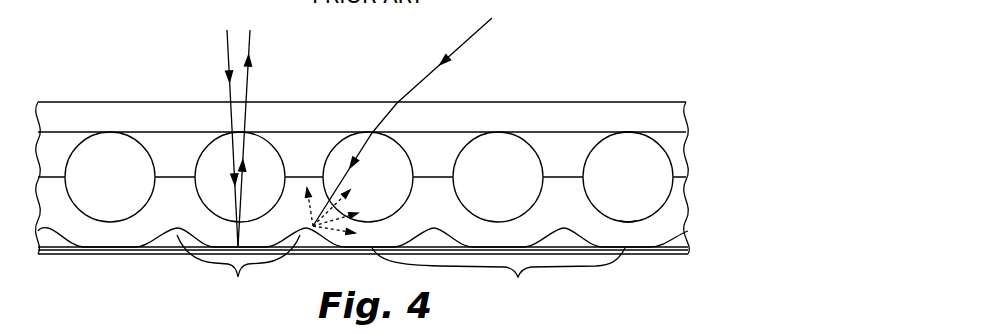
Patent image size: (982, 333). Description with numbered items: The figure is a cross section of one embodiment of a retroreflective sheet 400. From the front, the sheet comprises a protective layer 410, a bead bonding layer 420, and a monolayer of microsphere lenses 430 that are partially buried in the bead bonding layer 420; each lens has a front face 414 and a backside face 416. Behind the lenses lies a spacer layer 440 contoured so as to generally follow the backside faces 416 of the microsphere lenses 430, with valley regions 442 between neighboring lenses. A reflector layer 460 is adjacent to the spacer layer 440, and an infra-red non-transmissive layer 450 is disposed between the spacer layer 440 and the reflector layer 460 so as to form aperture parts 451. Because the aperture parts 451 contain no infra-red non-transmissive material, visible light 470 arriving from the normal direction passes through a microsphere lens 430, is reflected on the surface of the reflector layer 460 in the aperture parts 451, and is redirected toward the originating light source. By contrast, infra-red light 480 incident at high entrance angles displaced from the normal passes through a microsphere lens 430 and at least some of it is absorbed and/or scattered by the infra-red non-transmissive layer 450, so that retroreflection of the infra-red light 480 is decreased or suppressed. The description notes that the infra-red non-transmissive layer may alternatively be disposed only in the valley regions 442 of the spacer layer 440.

The retroreflective sheet 400 is at (622, 45).
The protective layer 410 is at (673, 117).
The front faces 414 is at (627, 132).
The backside faces 416 is at (629, 224).
The bead bonding layer 420 is at (676, 152).
The microsphere lenses 430 is at (637, 150).
The spacer layer 440 is at (676, 208).
The valley regions 442 is at (238, 269).
The infra-red non-transmissive layer 450 is at (683, 237).
The aperture parts 451 is at (498, 275).
The reflector layer 460 is at (667, 253).
The visible light 470 is at (226, 43).
The infra-red light 480 is at (458, 48).